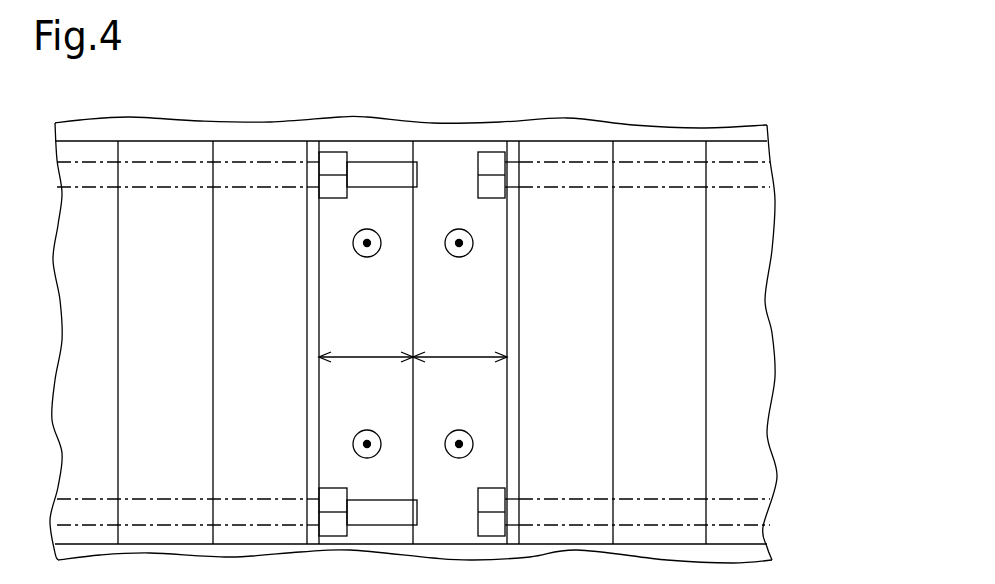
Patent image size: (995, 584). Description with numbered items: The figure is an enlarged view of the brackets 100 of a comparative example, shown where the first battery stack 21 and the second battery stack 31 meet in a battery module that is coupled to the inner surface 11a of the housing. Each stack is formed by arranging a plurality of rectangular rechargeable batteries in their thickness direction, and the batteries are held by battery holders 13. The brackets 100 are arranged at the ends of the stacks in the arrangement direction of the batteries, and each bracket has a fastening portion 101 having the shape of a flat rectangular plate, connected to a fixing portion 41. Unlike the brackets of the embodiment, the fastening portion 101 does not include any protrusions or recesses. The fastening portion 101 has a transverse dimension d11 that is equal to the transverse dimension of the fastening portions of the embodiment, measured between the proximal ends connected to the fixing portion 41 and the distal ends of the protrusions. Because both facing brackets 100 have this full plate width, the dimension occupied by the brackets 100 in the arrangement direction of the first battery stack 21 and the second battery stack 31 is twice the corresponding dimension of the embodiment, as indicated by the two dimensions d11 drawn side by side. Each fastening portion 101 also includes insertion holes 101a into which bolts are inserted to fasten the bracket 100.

The first battery stack 21 is at (150, 130).
The second battery stack 31 is at (675, 128).
The inner surface of the housing 11a is at (735, 140).
The battery holder 13 is at (233, 141).
The fixing portion 41 is at (307, 342).
The bracket 100 is at (337, 141).
The fastening portion 101 is at (433, 148).
The insertion hole 101a is at (367, 246).
The transverse dimension d11 is at (413, 345).